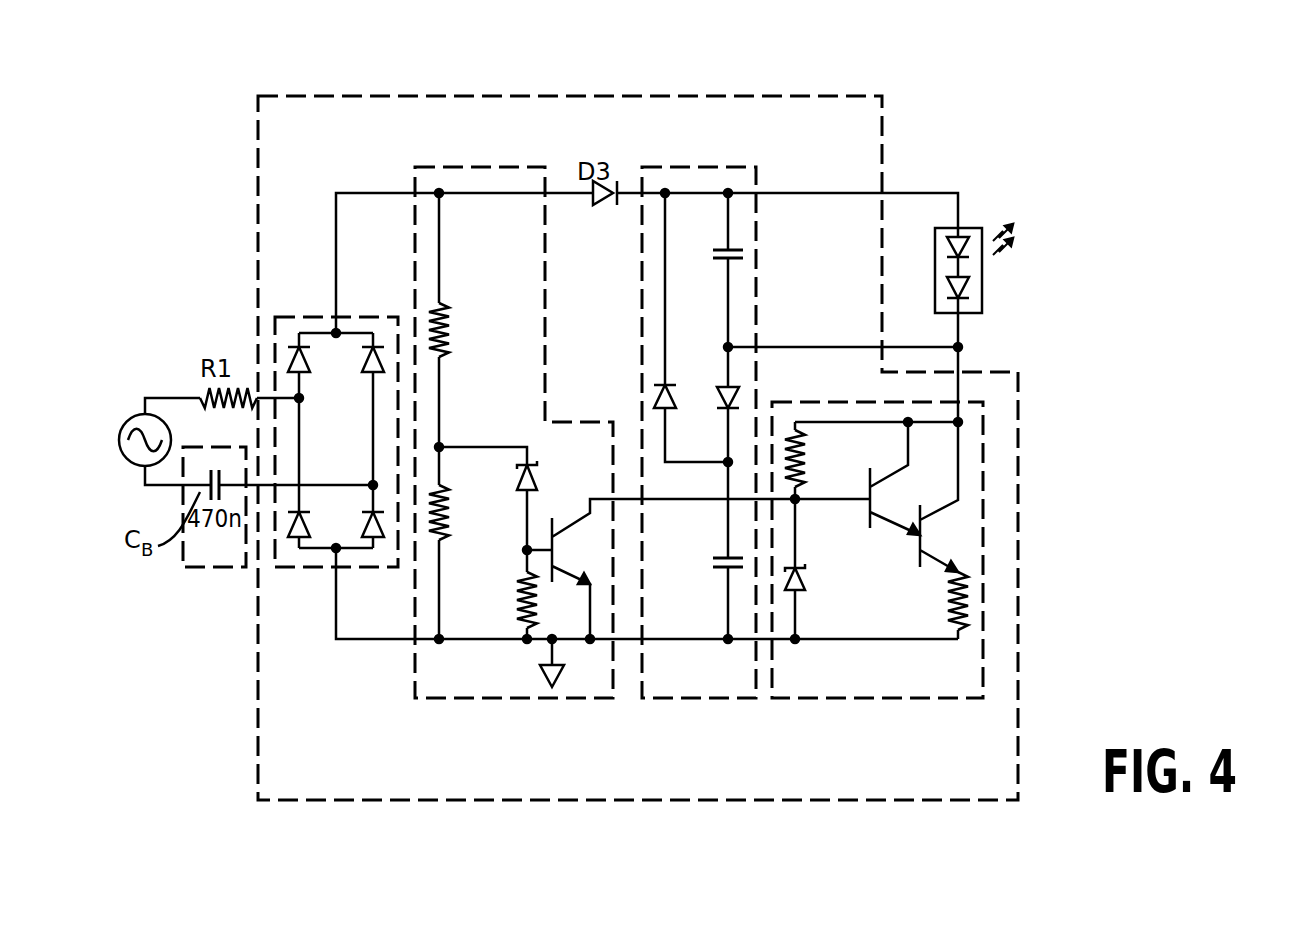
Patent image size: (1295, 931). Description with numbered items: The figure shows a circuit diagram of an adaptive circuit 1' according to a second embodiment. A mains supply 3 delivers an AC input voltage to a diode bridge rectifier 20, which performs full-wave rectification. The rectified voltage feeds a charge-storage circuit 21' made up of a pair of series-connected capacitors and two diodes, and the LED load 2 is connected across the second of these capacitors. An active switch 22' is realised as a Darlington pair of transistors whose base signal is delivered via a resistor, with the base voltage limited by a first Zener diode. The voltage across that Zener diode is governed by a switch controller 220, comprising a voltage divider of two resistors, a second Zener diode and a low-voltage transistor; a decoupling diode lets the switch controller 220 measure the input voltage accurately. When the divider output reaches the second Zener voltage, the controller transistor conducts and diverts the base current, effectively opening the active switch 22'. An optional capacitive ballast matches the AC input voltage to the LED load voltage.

The adaptive circuit 1' is at (638, 415).
The load 2 is at (982, 278).
The mains supply 3 is at (128, 421).
The diode bridge rectifier 20 is at (305, 317).
The charge-storage circuit 21' is at (800, 400).
The active switch 22' is at (877, 584).
The switch controller 220 is at (508, 698).